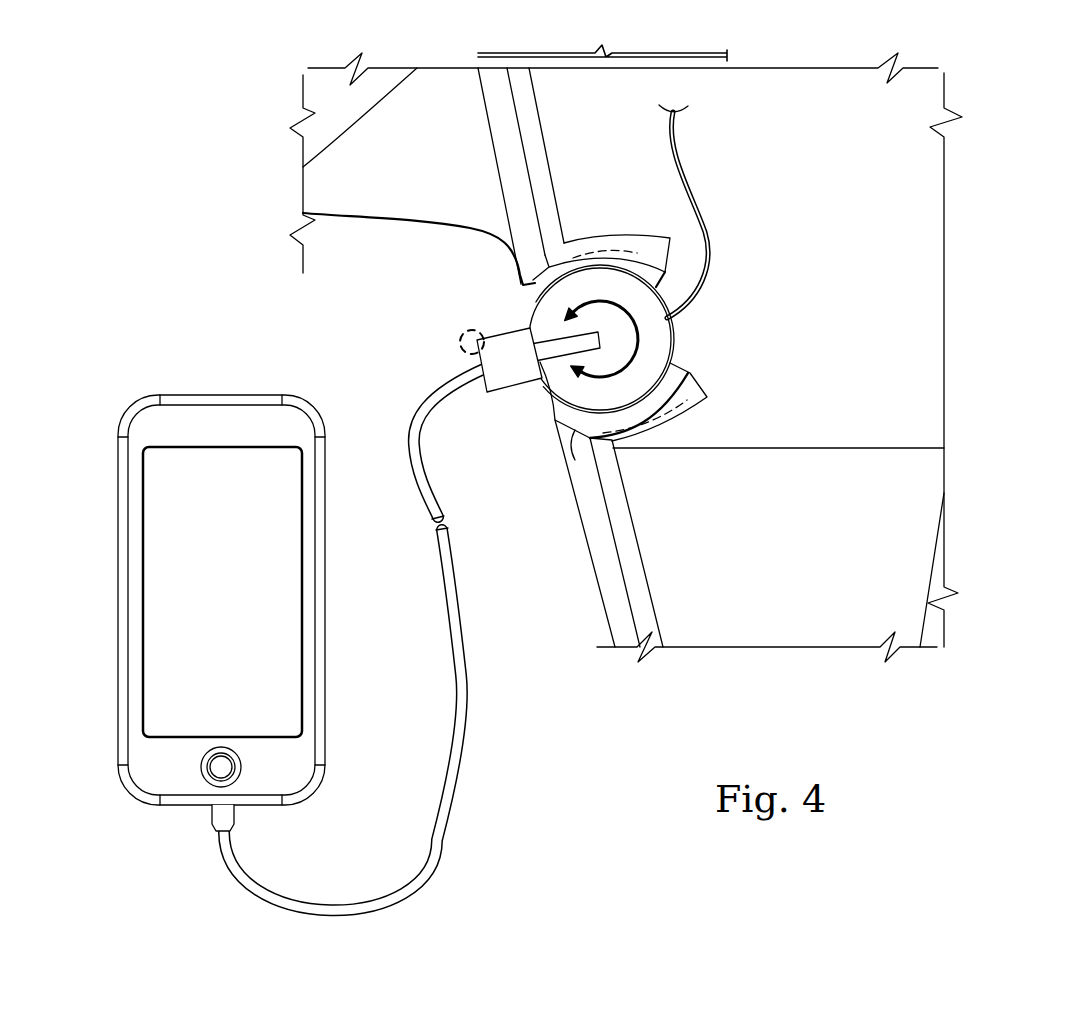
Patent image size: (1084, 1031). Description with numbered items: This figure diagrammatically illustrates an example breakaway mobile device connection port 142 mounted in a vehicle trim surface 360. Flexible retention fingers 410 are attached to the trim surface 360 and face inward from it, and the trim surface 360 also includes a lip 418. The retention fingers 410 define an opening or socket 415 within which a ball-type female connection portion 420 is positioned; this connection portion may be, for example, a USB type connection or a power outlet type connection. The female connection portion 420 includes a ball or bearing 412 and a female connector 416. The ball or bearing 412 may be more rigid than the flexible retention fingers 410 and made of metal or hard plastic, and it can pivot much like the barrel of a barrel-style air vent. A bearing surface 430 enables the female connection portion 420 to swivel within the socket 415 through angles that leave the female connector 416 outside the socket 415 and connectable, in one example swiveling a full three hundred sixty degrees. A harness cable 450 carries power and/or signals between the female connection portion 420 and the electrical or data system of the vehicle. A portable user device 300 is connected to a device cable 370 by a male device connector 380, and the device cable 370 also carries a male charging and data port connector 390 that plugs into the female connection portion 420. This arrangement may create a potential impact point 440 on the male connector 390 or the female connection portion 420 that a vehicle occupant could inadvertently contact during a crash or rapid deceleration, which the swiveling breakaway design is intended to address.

The breakaway mobile device connection port 142 is at (626, 339).
The portable user device 300 is at (118, 604).
The vehicle trim surface 360 is at (515, 130).
The device cable 370 is at (325, 916).
The male device connector 380 is at (208, 814).
The male charging and data port connector 390 is at (507, 393).
The retention fingers 410 is at (600, 250).
The ball or bearing 412 is at (660, 360).
The opening or socket 415 is at (692, 323).
The female connector 416 is at (560, 358).
The lip 418 is at (518, 273).
The ball-type female connection portion 420 is at (540, 318).
The bearing surface 430 is at (670, 333).
The potential impact point 440 is at (448, 340).
The harness cable 450 is at (708, 232).